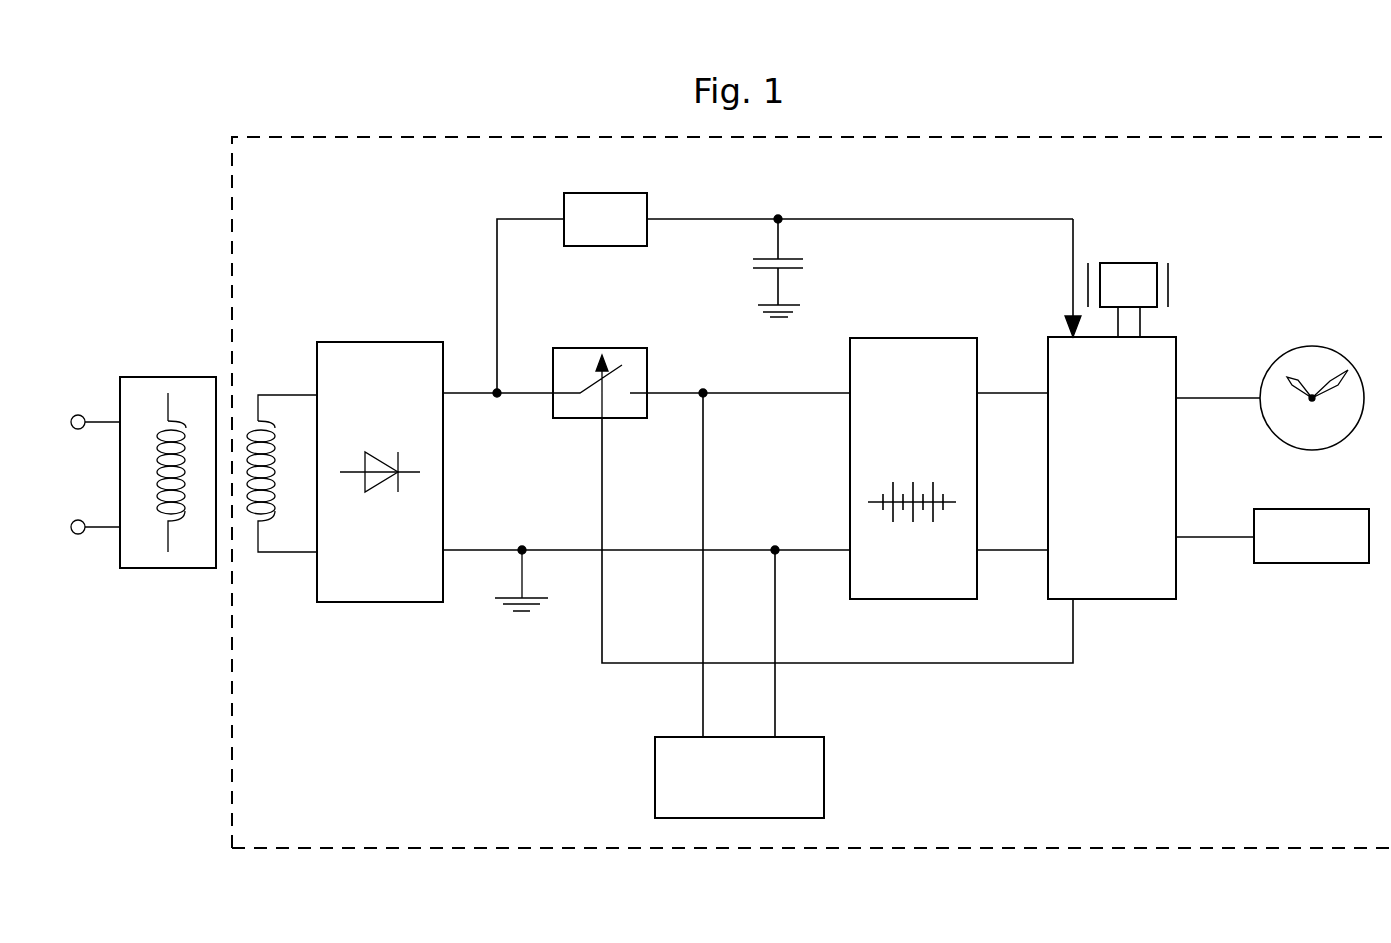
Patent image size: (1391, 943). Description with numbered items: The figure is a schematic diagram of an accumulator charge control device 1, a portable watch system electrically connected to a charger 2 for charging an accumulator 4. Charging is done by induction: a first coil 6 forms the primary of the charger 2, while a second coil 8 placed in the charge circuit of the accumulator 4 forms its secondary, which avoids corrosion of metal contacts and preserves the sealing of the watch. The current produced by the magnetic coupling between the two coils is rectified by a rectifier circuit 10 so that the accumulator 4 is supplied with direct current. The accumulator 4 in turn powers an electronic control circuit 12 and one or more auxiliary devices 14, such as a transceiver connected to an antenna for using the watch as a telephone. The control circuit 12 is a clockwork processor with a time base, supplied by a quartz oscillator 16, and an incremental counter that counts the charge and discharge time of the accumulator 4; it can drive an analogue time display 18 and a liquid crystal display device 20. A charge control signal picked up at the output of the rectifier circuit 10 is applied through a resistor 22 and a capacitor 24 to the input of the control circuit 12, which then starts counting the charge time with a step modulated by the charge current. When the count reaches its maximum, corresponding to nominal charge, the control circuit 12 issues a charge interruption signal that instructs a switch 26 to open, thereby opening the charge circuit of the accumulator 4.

The accumulator charge control device 1 is at (344, 137).
The charger 2 is at (146, 377).
The accumulator 4 is at (904, 461).
The first coil 6 is at (157, 512).
The second coil 8 is at (275, 512).
The rectifier circuit 10 is at (351, 352).
The electronic control circuit 12 is at (1098, 483).
The auxiliary devices 14 is at (725, 793).
The quartz oscillator 16 is at (1116, 297).
The analogue time display 18 is at (1292, 367).
The liquid crystal display device 20 is at (1297, 550).
The resistor 22 is at (619, 231).
The capacitor 24 is at (796, 266).
The switch 26 is at (580, 362).